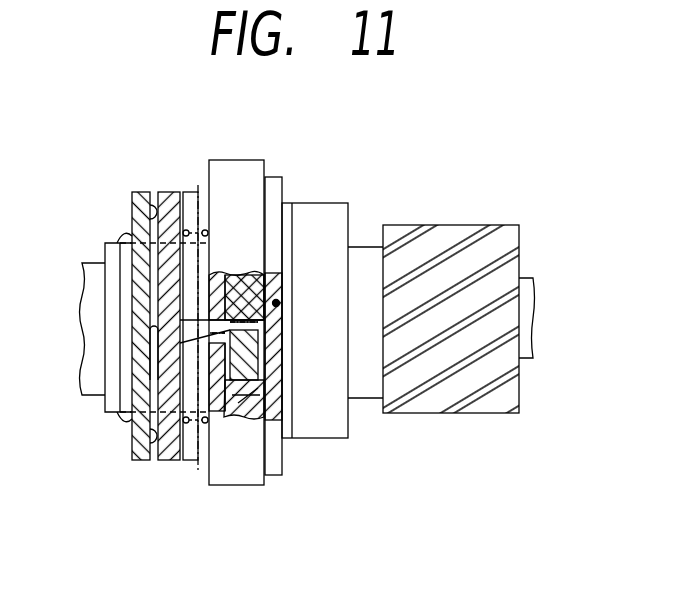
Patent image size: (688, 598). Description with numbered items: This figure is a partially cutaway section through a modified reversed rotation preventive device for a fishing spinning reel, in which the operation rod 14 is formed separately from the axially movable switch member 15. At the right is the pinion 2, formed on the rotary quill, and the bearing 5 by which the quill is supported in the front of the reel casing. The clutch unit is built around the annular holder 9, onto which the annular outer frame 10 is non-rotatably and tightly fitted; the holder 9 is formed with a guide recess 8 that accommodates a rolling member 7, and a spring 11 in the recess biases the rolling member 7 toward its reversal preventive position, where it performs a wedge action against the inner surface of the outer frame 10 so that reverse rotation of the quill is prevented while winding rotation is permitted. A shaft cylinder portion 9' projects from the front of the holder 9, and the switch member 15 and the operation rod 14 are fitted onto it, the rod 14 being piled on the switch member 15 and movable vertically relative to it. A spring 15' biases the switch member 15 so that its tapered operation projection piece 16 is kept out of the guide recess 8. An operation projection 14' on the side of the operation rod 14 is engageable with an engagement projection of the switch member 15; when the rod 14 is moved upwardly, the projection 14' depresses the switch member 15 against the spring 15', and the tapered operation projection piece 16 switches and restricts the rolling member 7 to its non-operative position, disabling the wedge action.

The pinion 2 is at (478, 225).
The bearing 5 is at (331, 418).
The rolling member 7 is at (278, 380).
The guide recess 8 is at (280, 303).
The annular holder 9 is at (236, 265).
The shaft cylinder portion 9' is at (145, 272).
The annular outer frame 10 is at (226, 172).
The spring 11 is at (247, 423).
The operation rod 14 is at (140, 363).
The operation projection 14' is at (124, 308).
The switch member 15 is at (169, 270).
The spring 15' is at (188, 394).
The operation projection piece 16 is at (203, 317).